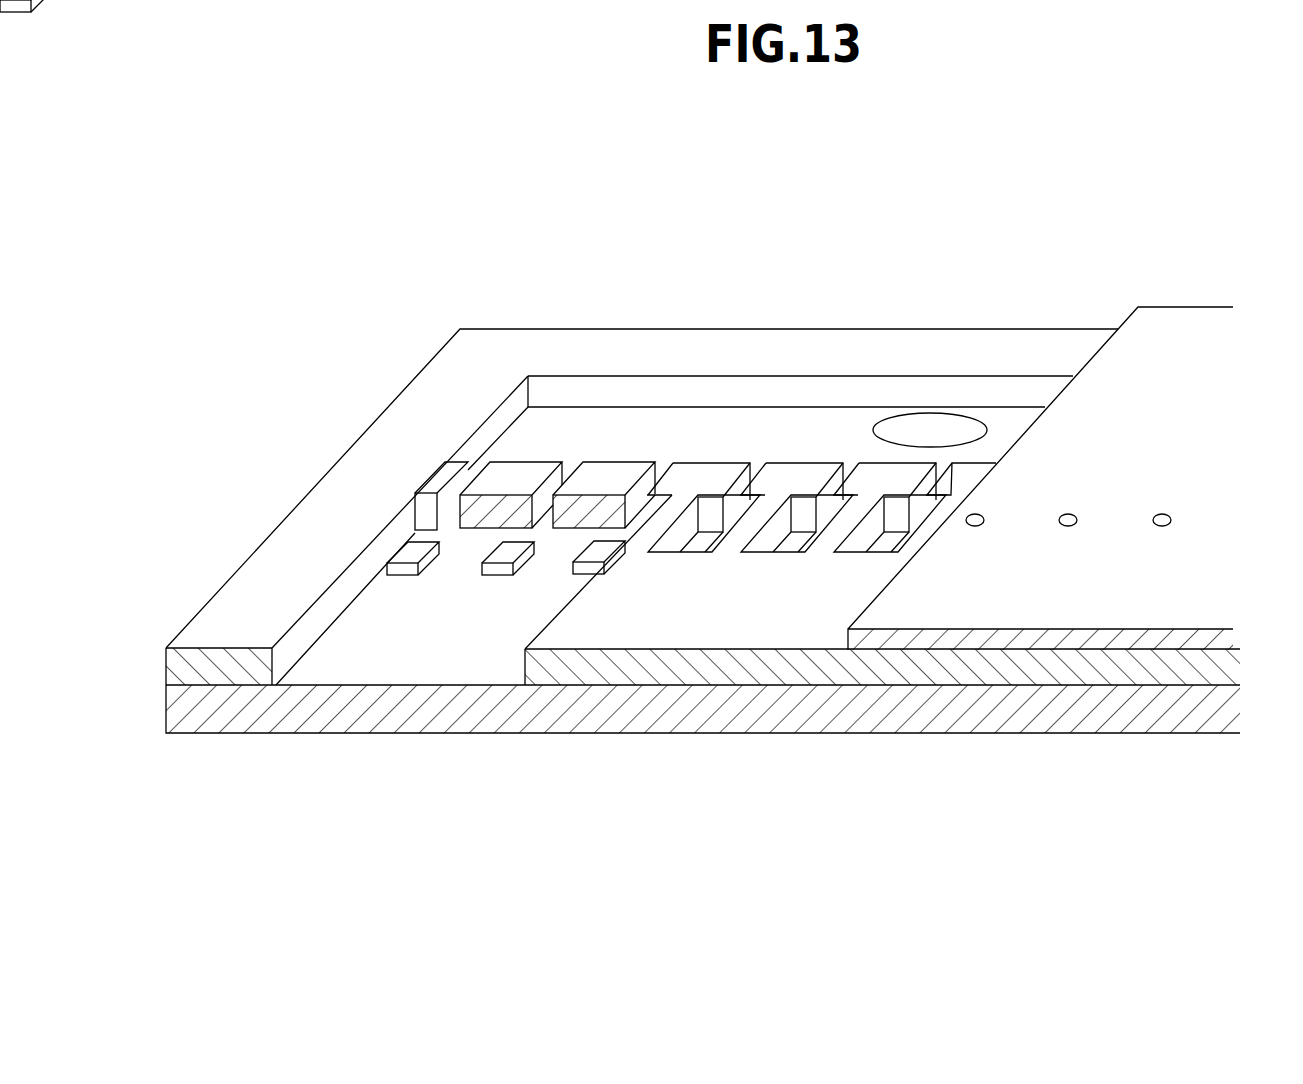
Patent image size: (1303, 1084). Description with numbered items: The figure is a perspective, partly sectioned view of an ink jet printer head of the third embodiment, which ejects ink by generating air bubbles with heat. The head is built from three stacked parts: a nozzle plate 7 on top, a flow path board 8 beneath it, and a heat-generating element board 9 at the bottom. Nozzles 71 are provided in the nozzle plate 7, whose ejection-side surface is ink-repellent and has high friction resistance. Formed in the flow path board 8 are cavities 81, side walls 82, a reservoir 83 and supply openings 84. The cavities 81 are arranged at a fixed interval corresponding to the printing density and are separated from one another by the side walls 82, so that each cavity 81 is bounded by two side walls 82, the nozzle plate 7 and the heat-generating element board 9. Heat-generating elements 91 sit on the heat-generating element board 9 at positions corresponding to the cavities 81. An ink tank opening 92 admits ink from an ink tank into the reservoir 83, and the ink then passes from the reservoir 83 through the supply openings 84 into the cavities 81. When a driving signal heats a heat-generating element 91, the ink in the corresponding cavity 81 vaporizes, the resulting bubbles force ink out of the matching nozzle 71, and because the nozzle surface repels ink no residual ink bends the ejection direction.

The nozzle plate 7 is at (1027, 640).
The nozzle 71 is at (1068, 527).
The flow path board 8 is at (733, 672).
The cavity 81 is at (729, 512).
The side wall 82 is at (767, 515).
The reservoir 83 is at (690, 425).
The supply opening 84 is at (547, 477).
The heat-generating element board 9 is at (633, 710).
The heat-generating element 91 is at (503, 543).
The ink tank opening 92 is at (937, 425).